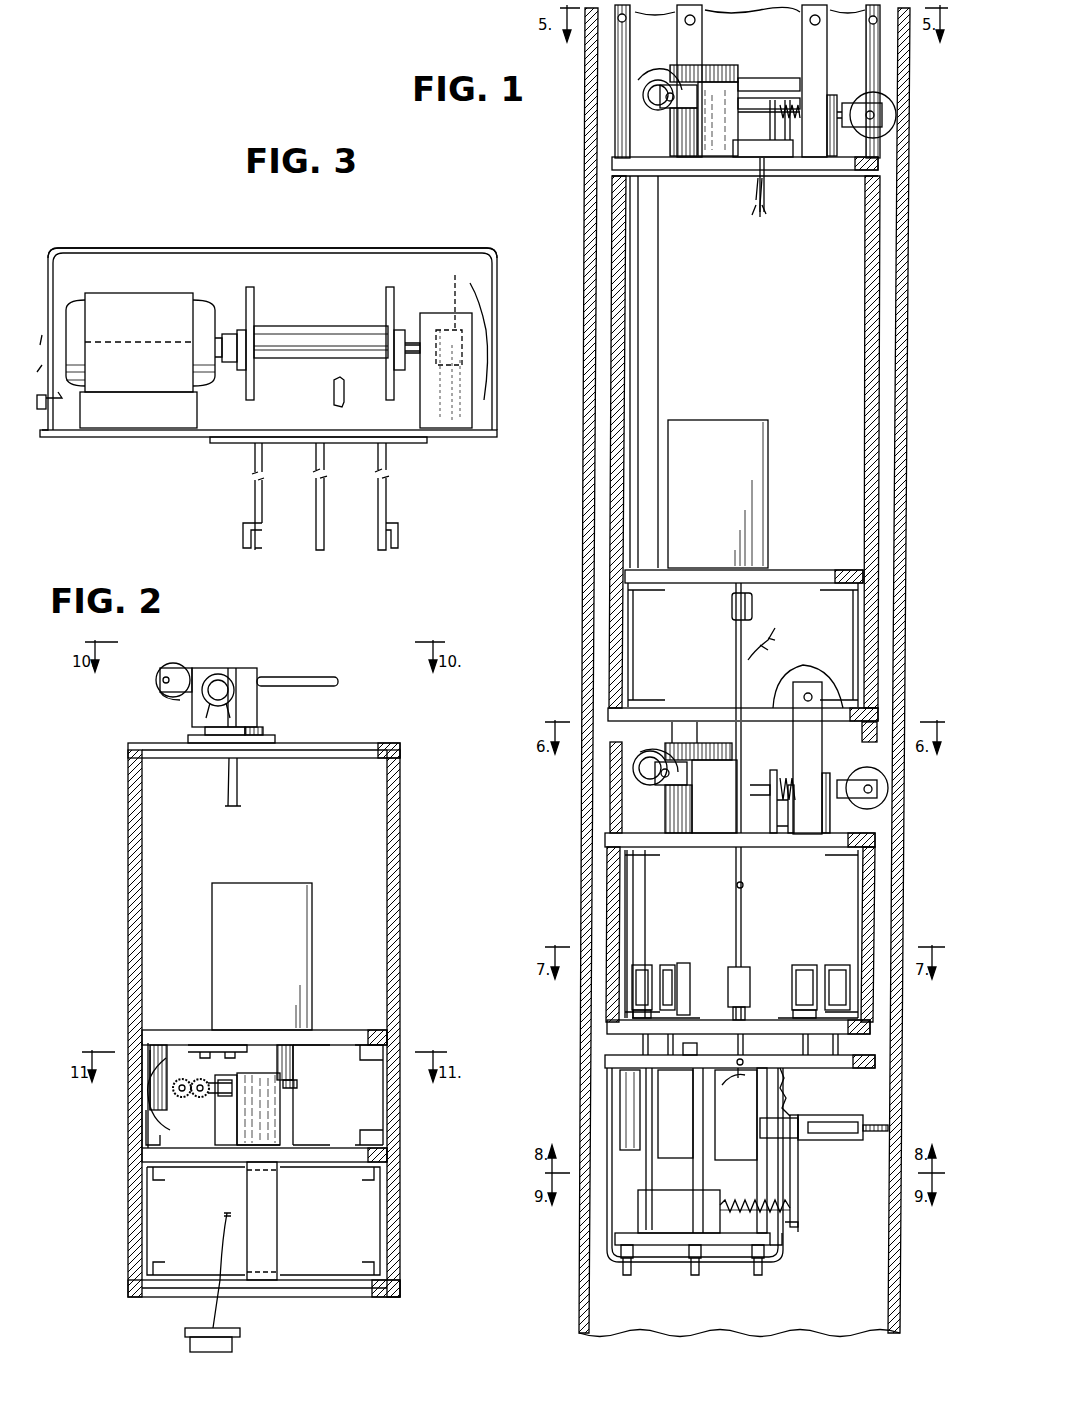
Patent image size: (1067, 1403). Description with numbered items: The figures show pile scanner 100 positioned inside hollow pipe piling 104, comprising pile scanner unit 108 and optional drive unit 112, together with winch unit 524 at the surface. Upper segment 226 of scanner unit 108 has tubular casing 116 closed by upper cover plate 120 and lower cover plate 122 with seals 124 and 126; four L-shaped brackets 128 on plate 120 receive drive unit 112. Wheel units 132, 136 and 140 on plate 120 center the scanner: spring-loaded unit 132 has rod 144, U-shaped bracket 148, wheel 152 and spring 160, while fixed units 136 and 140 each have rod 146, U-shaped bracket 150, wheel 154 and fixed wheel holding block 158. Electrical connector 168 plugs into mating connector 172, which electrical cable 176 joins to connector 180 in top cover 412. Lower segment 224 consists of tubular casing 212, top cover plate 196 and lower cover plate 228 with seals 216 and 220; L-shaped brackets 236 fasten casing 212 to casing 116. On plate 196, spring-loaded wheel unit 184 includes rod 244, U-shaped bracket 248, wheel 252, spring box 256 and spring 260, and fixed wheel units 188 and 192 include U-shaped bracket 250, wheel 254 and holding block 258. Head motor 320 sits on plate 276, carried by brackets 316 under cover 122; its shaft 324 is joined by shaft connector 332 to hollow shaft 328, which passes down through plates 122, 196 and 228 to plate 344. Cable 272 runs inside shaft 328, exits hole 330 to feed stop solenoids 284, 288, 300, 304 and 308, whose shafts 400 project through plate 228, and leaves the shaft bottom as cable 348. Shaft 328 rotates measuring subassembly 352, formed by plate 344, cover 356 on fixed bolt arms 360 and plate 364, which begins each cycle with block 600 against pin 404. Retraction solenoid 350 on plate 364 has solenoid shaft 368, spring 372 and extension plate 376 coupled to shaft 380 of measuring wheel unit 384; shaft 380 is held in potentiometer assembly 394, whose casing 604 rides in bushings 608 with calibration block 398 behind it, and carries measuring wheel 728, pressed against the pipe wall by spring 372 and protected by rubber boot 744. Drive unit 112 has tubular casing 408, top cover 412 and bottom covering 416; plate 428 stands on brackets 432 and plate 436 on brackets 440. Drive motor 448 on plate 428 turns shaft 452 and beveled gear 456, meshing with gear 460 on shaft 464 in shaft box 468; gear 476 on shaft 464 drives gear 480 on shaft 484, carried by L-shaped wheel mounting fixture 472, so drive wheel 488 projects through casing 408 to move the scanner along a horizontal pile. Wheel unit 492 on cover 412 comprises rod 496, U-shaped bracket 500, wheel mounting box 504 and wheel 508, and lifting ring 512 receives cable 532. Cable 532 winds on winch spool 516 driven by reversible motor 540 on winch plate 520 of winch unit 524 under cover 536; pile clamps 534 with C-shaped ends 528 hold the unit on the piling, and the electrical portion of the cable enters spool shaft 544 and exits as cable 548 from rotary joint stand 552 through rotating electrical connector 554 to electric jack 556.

In FIG. 1, the pile scanner 100 is at (880, 384).
In FIG. 1, the pipe piling 104 is at (737, 671).
In FIG. 1, the pile scanner unit 108 is at (588, 516).
In FIG. 2, the drive unit 112 is at (260, 1023).
In FIG. 1, the tubular casing 116 is at (882, 450).
In FIG. 1, the upper cover plate 120 is at (848, 180).
In FIG. 1, the lower cover plate 122 is at (880, 720).
In FIG. 1, the seal 124 is at (880, 170).
In FIG. 1, the seal 126 is at (882, 673).
In FIG. 1, the L-shaped brackets 128 is at (680, 20).
In FIG. 1, the wheel unit 132 is at (855, 96).
In FIG. 1, the wheel unit 136 is at (661, 149).
In FIG. 1, the wheel unit 140 is at (690, 72).
In FIG. 1, the rod 144 is at (765, 186).
In FIG. 1, the rod 146 is at (755, 90).
In FIG. 1, the U-shaped bracket 148 is at (882, 110).
In FIG. 1, the U-shaped bracket 150 is at (645, 88).
In FIG. 1, the wheel 152 is at (885, 120).
In FIG. 1, the wheel 154 is at (655, 95).
In FIG. 1, the fixed wheel holding block 158 is at (700, 75).
In FIG. 1, the spring 160 is at (795, 122).
In FIG. 1, the electrical connector 168 is at (742, 158).
In FIG. 2, the mating electrical connector 172 is at (233, 1345).
In FIG. 2, the electrical cable 176 is at (238, 788).
In FIG. 2, the electrical connector 180 is at (206, 732).
In FIG. 1, the wheel unit 184 is at (848, 772).
In FIG. 1, the wheel unit 188 is at (702, 815).
In FIG. 1, the wheel unit 192 is at (713, 746).
In FIG. 1, the top cover plate 196 is at (878, 840).
In FIG. 1, the tubular casing 212 is at (876, 905).
In FIG. 1, the seal 216 is at (876, 860).
In FIG. 1, the seal 220 is at (875, 1028).
In FIG. 1, the segment 224 is at (645, 889).
In FIG. 1, the segment 226 is at (658, 335).
In FIG. 1, the lower cover plate 228 is at (872, 1050).
In FIG. 1, the L-shaped brackets 236 is at (683, 728).
In FIG. 1, the rod 244 is at (777, 790).
In FIG. 1, the U-shaped bracket 248 is at (880, 800).
In FIG. 1, the U-shaped bracket 250 is at (672, 790).
In FIG. 1, the wheel 252 is at (890, 790).
In FIG. 1, the wheel 254 is at (638, 773).
In FIG. 1, the spring box 256 is at (778, 835).
In FIG. 1, the fixed wheel holding block 258 is at (722, 830).
In FIG. 1, the spring 260 is at (790, 842).
In FIG. 1, the cable 272 is at (752, 200).
In FIG. 1, the plate 276 is at (790, 568).
In FIG. 1, the stop solenoid 284 is at (640, 985).
In FIG. 1, the stop solenoid 288 is at (720, 948).
In FIG. 1, the stop solenoid 300 is at (840, 975).
In FIG. 1, the stop solenoid 304 is at (800, 960).
In FIG. 1, the stop solenoid 308 is at (741, 988).
In FIG. 1, the brackets 316 is at (628, 600).
In FIG. 1, the head motor 320 is at (760, 440).
In FIG. 1, the shaft 324 is at (712, 608).
In FIG. 1, the hollow shaft 328 is at (735, 640).
In FIG. 1, the hole 330 is at (745, 885).
In FIG. 1, the shaft connector 332 is at (730, 597).
In FIG. 1, the plate 344 is at (876, 1066).
In FIG. 1, the electrical cable 348 is at (739, 1090).
In FIG. 1, the retraction solenoid 350 is at (660, 1215).
In FIG. 1, the rotable measuring subassembly 352 is at (608, 1223).
In FIG. 1, the cover 356 is at (723, 1276).
In FIG. 1, the fixed bolt arms 360 is at (723, 1276).
In FIG. 1, the plate 364 is at (720, 1265).
In FIG. 1, the solenoid shaft 368 is at (790, 1210).
In FIG. 1, the solenoid shaft spring 372 is at (778, 1245).
In FIG. 1, the solenoid extension plate 376 is at (798, 1178).
In FIG. 1, the shaft 380 is at (805, 1128).
In FIG. 1, the measuring wheel unit 384 is at (608, 1108).
In FIG. 1, the potentiometer assembly 394 is at (646, 1162).
In FIG. 1, the calibration block 398 is at (638, 1085).
In FIG. 1, the solenoid shaft 400 is at (648, 1045).
In FIG. 1, the pin 404 is at (680, 1042).
In FIG. 2, the tubular casing 408 is at (130, 962).
In FIG. 2, the top cover 412 is at (330, 746).
In FIG. 2, the bottom covering 416 is at (333, 1290).
In FIG. 2, the plate 428 is at (385, 1155).
In FIG. 2, the brackets 432 is at (150, 1215).
In FIG. 2, the plate 436 is at (375, 1032).
In FIG. 2, the brackets 440 is at (265, 1060).
In FIG. 2, the drive motor 448 is at (263, 998).
In FIG. 2, the shaft 452 is at (290, 1062).
In FIG. 2, the beveled gear 456 is at (298, 1085).
In FIG. 2, the beveled gear 460 is at (299, 1109).
In FIG. 2, the shaft 464 is at (258, 1110).
In FIG. 2, the shaft box 468 is at (278, 1138).
In FIG. 2, the L-shaped wheel mounting fixture 472 is at (150, 1055).
In FIG. 2, the beveled gear 476 is at (205, 1100).
In FIG. 2, the beveled gear 480 is at (180, 1078).
In FIG. 2, the shaft 484 is at (152, 1135).
In FIG. 2, the drive wheel 488 is at (150, 1093).
In FIG. 2, the wheel unit 492 is at (216, 668).
In FIG. 2, the rod 496 is at (305, 679).
In FIG. 2, the U-shaped bracket 500 is at (172, 663).
In FIG. 2, the wheel mounting box 504 is at (252, 670).
In FIG. 2, the wheel 508 is at (165, 695).
In FIG. 2, the lifting ring 512 is at (224, 673).
In FIG. 3, the winch spool 516 is at (276, 338).
In FIG. 3, the winch plate 520 is at (455, 440).
In FIG. 3, the winch unit 524 is at (229, 247).
In FIG. 3, the C-shaped end 528 is at (396, 537).
In FIG. 3, the cable 532 is at (345, 393).
In FIG. 3, the pile clamps 534 is at (258, 490).
In FIG. 3, the cover 536 is at (363, 252).
In FIG. 3, the reversible motor 540 is at (128, 310).
In FIG. 3, the shaft 544 is at (413, 342).
In FIG. 3, the electrical cable 548 is at (490, 310).
In FIG. 3, the rotary joint stand 552 is at (470, 393).
In FIG. 3, the rotating electrical connector 554 is at (455, 278).
In FIG. 3, the electric jack 556 is at (40, 398).
In FIG. 1, the block 600 is at (718, 1030).
In FIG. 1, the potentiometer casing 604 is at (735, 1155).
In FIG. 1, the bushings 608 is at (675, 1160).
In FIG. 1, the measuring wheel 728 is at (886, 1128).
In FIG. 1, the waterproof expandable rubber boot 744 is at (794, 1228).